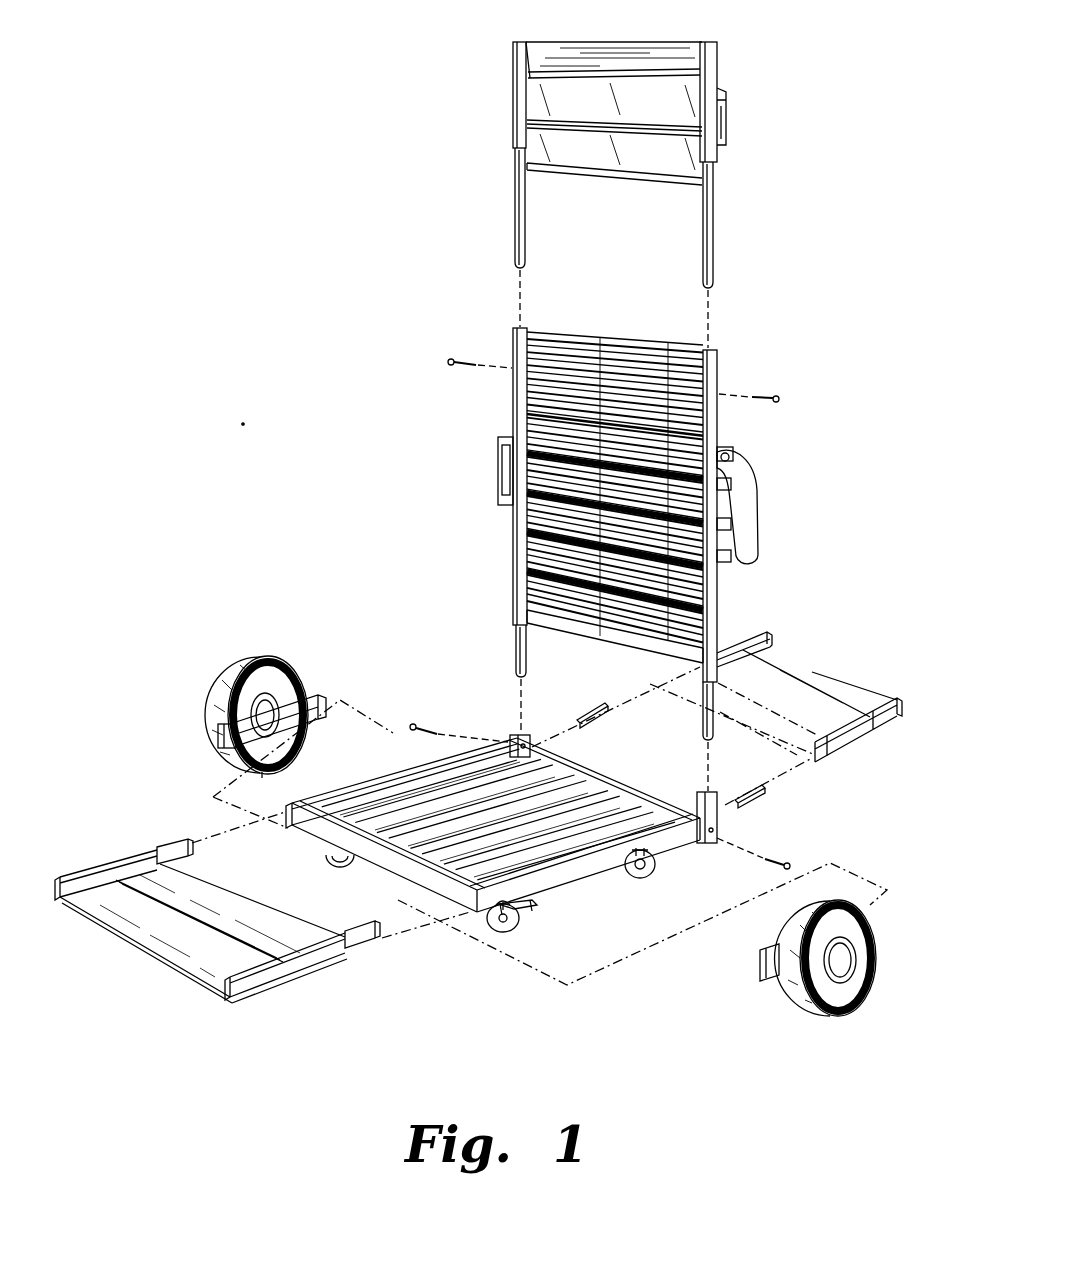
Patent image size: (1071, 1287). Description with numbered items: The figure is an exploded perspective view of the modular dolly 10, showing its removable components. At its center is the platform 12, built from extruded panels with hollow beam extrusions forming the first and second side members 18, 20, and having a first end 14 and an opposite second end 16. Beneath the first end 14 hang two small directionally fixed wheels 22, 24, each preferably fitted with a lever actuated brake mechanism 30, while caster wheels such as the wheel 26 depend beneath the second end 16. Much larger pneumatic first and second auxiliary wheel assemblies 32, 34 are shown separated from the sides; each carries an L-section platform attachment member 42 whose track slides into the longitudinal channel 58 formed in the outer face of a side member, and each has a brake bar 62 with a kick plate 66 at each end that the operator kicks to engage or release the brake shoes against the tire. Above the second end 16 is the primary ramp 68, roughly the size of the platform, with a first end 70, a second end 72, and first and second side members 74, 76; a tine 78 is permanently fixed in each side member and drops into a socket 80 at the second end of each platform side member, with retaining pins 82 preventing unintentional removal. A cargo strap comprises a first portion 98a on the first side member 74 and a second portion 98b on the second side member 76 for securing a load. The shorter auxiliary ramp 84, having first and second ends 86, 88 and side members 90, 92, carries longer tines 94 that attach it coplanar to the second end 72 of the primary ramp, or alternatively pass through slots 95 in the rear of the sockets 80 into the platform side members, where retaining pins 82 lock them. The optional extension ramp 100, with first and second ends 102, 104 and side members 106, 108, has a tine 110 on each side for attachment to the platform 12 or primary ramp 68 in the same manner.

The modular dolly 10 is at (160, 420).
The platform 12 is at (421, 855).
The first end 14 is at (375, 870).
The second end 16 is at (600, 785).
The first side member 18 is at (565, 900).
The second side member 20 is at (395, 770).
The first end wheel 22 is at (515, 932).
The first end wheel 24 is at (325, 855).
The second end wheel 26 is at (675, 860).
The lever actuated brake mechanism 30 is at (528, 908).
The first auxiliary wheel assembly 32 is at (870, 945).
The second auxiliary wheel assembly 34 is at (240, 668).
The platform attachment member 42 is at (266, 775).
The longitudinal channel 58 is at (605, 888).
The brake bar 62 is at (300, 712).
The kick plate 66 is at (222, 744).
The primary ramp 68 is at (522, 543).
The first end of primary ramp 70 is at (578, 645).
The second end of primary ramp 72 is at (575, 486).
The first side member of primary ramp 74 is at (717, 598).
The second side member of primary ramp 76 is at (513, 408).
The tine 78 is at (516, 650).
The socket 80 is at (518, 735).
The retaining pin 82 is at (432, 728).
The auxiliary ramp 84 is at (666, 111).
The first end of auxiliary ramp 86 is at (603, 176).
The second end of auxiliary ramp 88 is at (590, 42).
The first side member of auxiliary ramp 90 is at (726, 96).
The second side member of auxiliary ramp 92 is at (513, 90).
The tine 94 is at (515, 200).
The slot 95 is at (540, 748).
The first strap portion 98a is at (748, 486).
The second strap portion 98b is at (500, 470).
The extension ramp 100 is at (255, 934).
The first end of extension ramp 102 is at (203, 918).
The second end of extension ramp 104 is at (262, 862).
The first side member of extension ramp 106 is at (82, 870).
The second side member of extension ramp 108 is at (312, 985).
The tine 110 is at (170, 842).